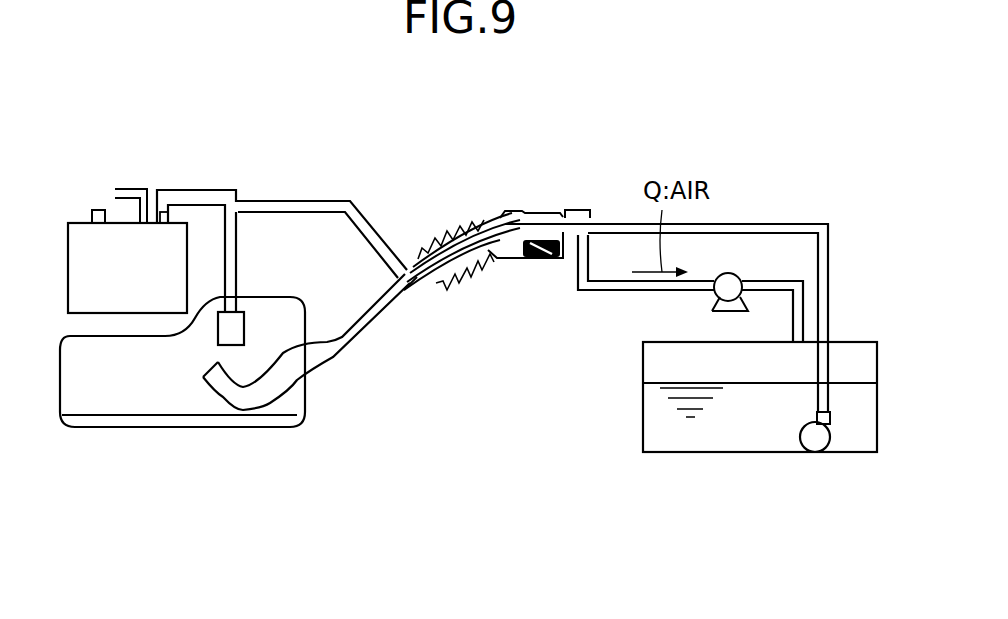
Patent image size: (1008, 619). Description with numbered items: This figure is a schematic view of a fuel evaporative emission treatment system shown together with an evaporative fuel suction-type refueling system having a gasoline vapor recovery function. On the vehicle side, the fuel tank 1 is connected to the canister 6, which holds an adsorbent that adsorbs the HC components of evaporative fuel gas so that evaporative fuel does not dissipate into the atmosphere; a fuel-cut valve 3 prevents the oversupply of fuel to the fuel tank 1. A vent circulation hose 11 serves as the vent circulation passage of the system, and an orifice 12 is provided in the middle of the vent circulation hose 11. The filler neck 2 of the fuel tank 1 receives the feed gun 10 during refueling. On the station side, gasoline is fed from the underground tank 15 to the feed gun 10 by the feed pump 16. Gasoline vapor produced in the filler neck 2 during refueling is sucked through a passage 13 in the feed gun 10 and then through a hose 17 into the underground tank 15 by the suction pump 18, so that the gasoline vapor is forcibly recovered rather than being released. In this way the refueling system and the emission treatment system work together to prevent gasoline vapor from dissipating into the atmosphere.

The fuel tank 1 is at (109, 428).
The filler neck 2 is at (371, 349).
The fuel-cut valve 3 is at (245, 322).
The canister 6 is at (83, 215).
The feed gun 10 is at (523, 200).
The vent circulation hose 11 is at (288, 203).
The orifice 12 is at (387, 253).
The passage 13 is at (441, 238).
The underground tank 15 is at (634, 410).
The feed pump 16 is at (815, 445).
The hose 17 is at (590, 292).
The suction pump 18 is at (712, 303).